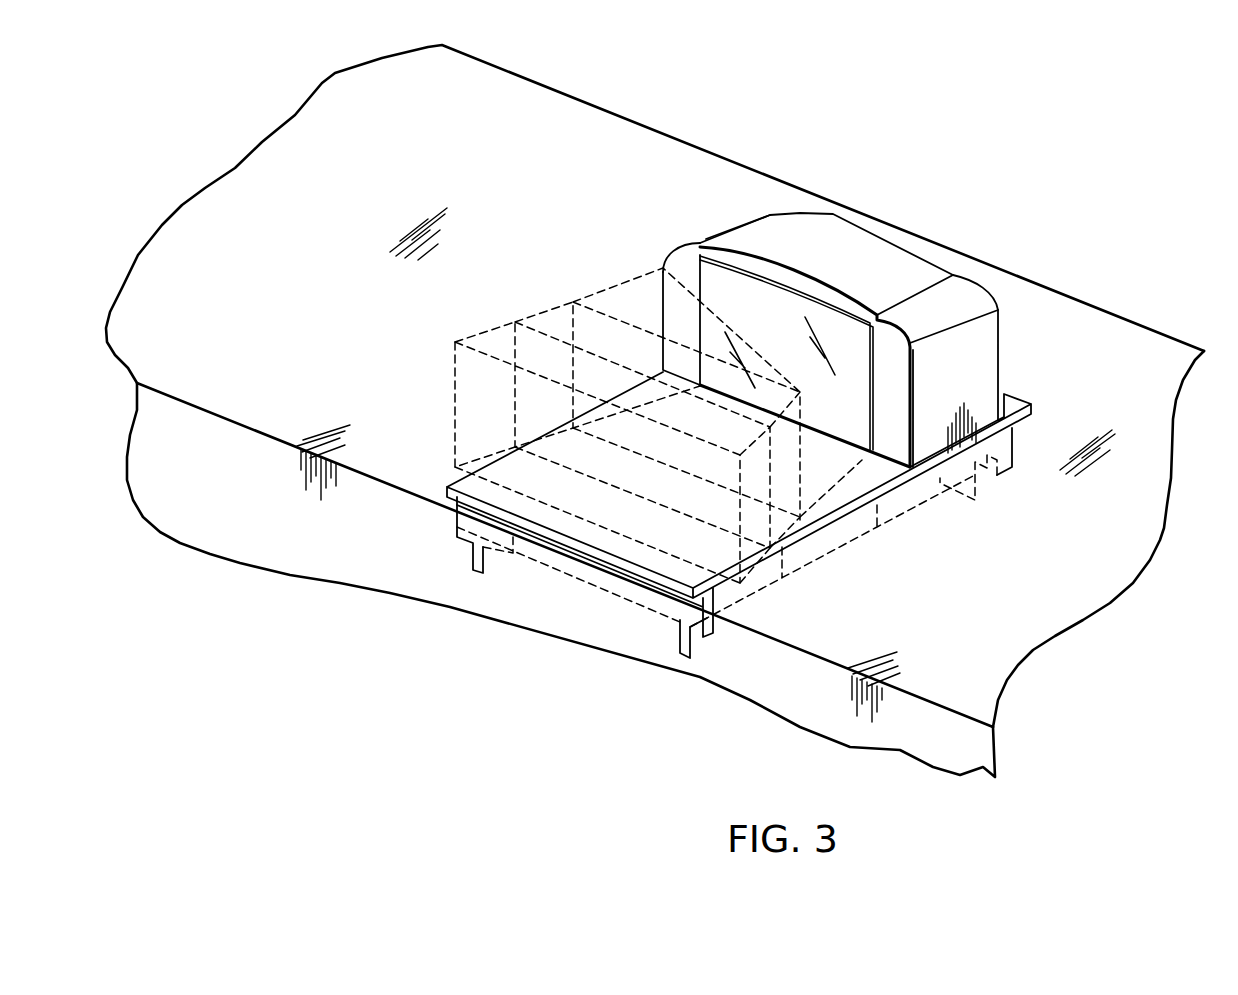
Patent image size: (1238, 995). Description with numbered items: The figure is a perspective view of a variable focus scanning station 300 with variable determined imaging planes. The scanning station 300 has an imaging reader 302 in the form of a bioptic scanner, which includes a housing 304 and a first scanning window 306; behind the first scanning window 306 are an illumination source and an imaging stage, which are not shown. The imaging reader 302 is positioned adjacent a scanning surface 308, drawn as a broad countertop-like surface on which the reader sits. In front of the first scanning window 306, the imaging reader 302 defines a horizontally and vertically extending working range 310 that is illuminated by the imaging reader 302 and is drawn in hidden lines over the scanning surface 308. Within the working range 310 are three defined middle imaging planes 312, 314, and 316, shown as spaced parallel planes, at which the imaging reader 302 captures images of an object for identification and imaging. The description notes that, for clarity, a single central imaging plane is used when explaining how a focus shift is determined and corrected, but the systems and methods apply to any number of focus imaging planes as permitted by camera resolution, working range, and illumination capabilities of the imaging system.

The scanning station 300 is at (191, 91).
The imaging reader 302 is at (745, 225).
The housing 304 is at (977, 332).
The first scanning window 306 is at (835, 327).
The scanning surface 308 is at (397, 478).
The working range 310 is at (630, 280).
The middle imaging plane 312 is at (571, 300).
The middle imaging plane 314 is at (513, 320).
The middle imaging plane 316 is at (456, 341).